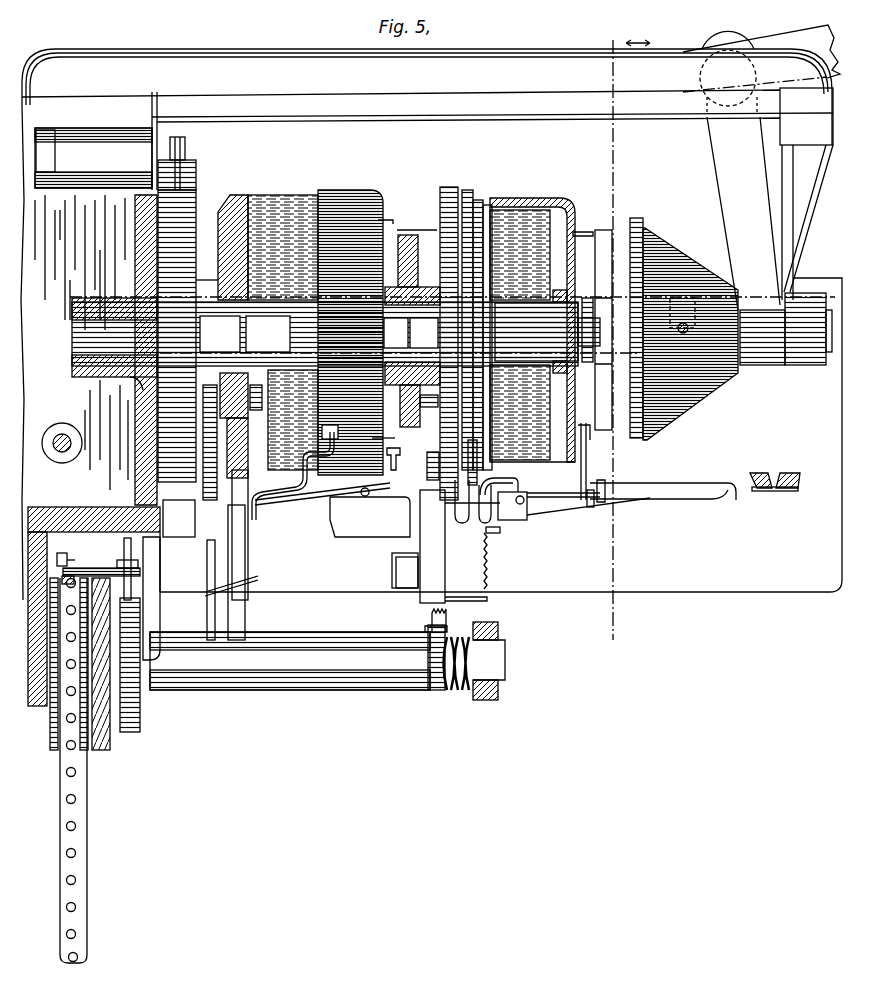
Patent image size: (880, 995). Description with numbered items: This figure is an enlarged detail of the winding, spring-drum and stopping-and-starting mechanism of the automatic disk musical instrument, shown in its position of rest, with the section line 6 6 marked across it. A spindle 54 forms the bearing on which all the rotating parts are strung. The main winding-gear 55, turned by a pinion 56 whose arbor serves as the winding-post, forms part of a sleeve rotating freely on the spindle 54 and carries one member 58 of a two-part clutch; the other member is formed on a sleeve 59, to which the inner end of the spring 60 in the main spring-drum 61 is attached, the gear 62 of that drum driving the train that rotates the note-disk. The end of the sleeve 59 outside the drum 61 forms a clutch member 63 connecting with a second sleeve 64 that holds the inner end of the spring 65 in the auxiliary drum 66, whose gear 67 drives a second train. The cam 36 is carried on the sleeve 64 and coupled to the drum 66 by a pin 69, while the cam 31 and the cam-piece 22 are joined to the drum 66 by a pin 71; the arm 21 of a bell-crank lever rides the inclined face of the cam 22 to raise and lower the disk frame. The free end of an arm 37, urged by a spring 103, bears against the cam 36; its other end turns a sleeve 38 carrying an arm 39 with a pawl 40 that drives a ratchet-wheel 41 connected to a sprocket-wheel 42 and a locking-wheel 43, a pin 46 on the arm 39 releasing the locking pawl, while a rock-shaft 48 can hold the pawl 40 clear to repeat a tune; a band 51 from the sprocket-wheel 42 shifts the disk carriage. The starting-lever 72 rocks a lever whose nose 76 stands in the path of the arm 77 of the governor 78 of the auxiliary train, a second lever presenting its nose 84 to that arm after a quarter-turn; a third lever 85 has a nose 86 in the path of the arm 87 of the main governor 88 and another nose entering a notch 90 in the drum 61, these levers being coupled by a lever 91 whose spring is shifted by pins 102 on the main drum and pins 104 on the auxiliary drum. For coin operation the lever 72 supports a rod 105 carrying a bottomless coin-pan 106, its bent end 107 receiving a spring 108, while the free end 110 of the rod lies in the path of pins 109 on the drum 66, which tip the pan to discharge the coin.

The section line 6 is at (617, 340).
The arm of bell-crank lever 21 is at (742, 266).
The cam-piece 22 is at (692, 264).
The cam 31 is at (616, 232).
The cam 36 is at (410, 235).
The arm 37 is at (446, 618).
The sleeve 38 is at (327, 661).
The arm 39 is at (150, 557).
The pawl 40 is at (101, 564).
The ratchet-wheel 41 is at (110, 746).
The sprocket-wheel 42 is at (86, 752).
The locking-wheel 43 is at (140, 718).
The pin 46 is at (124, 546).
The rock-shaft 48 is at (60, 548).
The band 51 is at (82, 838).
The spindle 54 is at (90, 330).
The main winding-gear 55 is at (192, 208).
The pinion 56 is at (196, 172).
The clutch member 58 is at (220, 408).
The sleeve 59 is at (243, 316).
The spring 60 is at (290, 206).
The main spring-drum 61 is at (360, 196).
The gear 62 is at (240, 196).
The clutch member 63 is at (396, 333).
The sleeve 64 is at (424, 333).
The spring 65 is at (513, 207).
The auxiliary spring-drum 66 is at (555, 200).
The gear 67 is at (462, 195).
The pin 69 is at (430, 408).
The pin 71 is at (612, 400).
The starting-lever 72 is at (533, 503).
The nose 76 is at (500, 533).
The arm of governor 77 is at (490, 560).
The governor 78 is at (405, 570).
The nose 84 is at (470, 520).
The third pivoted lever 85 is at (258, 499).
The nose 86 is at (248, 554).
The arm of governor 87 is at (256, 578).
The governor 88 is at (236, 607).
The notch 90 is at (330, 426).
The lever 91 is at (300, 503).
The pins 102 is at (390, 217).
The spring 103 is at (465, 688).
The pins 104 is at (400, 228).
The rod 105 is at (700, 483).
The coin-pan 106 is at (774, 490).
The bent end of rod 107 is at (582, 515).
The spring 108 is at (592, 508).
The pins 109 is at (585, 233).
The free end of rod 110 is at (582, 470).